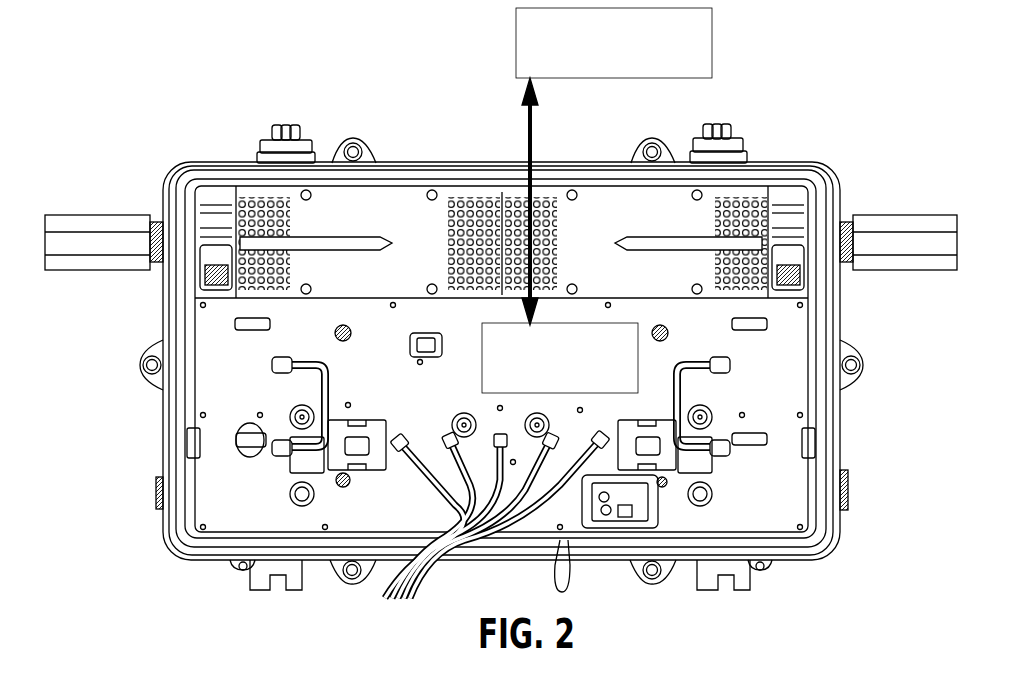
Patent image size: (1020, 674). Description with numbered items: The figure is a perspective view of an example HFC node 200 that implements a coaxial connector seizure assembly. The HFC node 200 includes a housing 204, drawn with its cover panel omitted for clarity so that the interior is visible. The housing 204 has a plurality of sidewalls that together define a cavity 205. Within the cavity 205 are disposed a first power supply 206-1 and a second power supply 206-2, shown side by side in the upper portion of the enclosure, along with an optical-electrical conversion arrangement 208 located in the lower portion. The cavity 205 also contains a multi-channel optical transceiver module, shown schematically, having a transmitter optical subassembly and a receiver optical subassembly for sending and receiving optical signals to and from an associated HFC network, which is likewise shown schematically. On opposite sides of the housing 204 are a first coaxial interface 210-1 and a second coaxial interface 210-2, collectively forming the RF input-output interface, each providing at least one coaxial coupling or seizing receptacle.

The HFC node 200 is at (217, 120).
The housing 204 is at (830, 165).
The cavity 205 is at (186, 303).
The first power supply 206-1 is at (470, 185).
The second power supply 206-2 is at (568, 185).
The optical-electrical conversion arrangement 208 is at (200, 496).
The first coaxial interface 210-1 is at (866, 417).
The second coaxial interface 210-2 is at (132, 418).